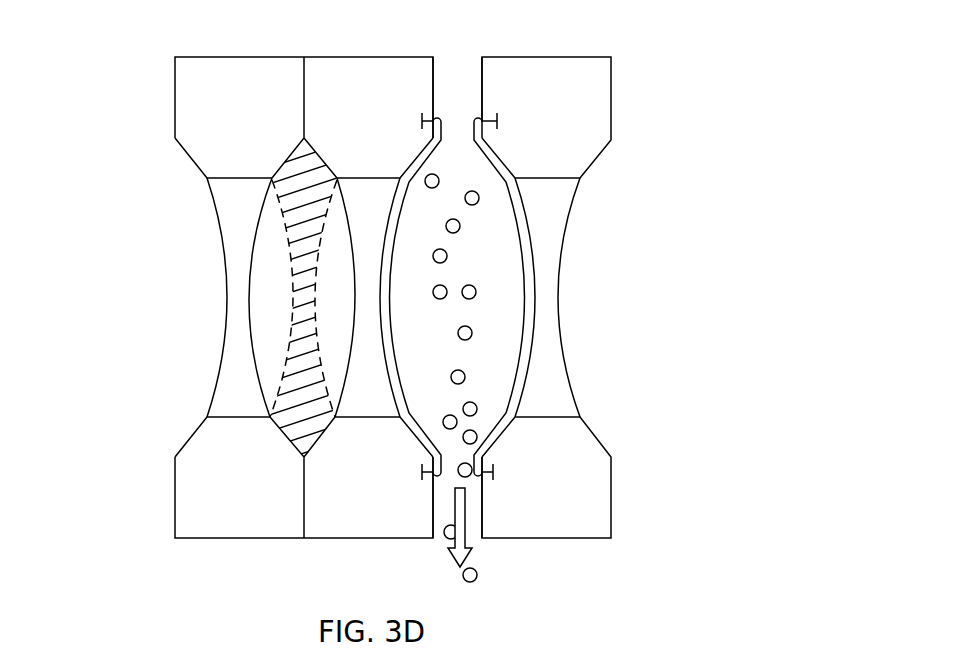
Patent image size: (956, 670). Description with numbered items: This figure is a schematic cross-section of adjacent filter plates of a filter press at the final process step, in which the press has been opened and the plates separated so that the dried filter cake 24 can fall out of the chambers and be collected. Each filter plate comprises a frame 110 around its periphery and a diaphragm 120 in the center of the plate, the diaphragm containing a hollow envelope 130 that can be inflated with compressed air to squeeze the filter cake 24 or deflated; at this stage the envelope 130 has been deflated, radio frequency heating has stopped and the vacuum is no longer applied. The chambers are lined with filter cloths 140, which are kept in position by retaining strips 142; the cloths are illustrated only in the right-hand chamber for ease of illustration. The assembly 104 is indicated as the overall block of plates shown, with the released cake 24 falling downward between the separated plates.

The nozzle die assembly 104 is at (120, 98).
The frame 110 is at (202, 152).
The diaphragm 120 is at (223, 348).
The hollow envelope 130 is at (233, 372).
The filter cloths 140 is at (515, 222).
The retaining strips 142 is at (498, 116).
The filter cake 24 is at (467, 331).